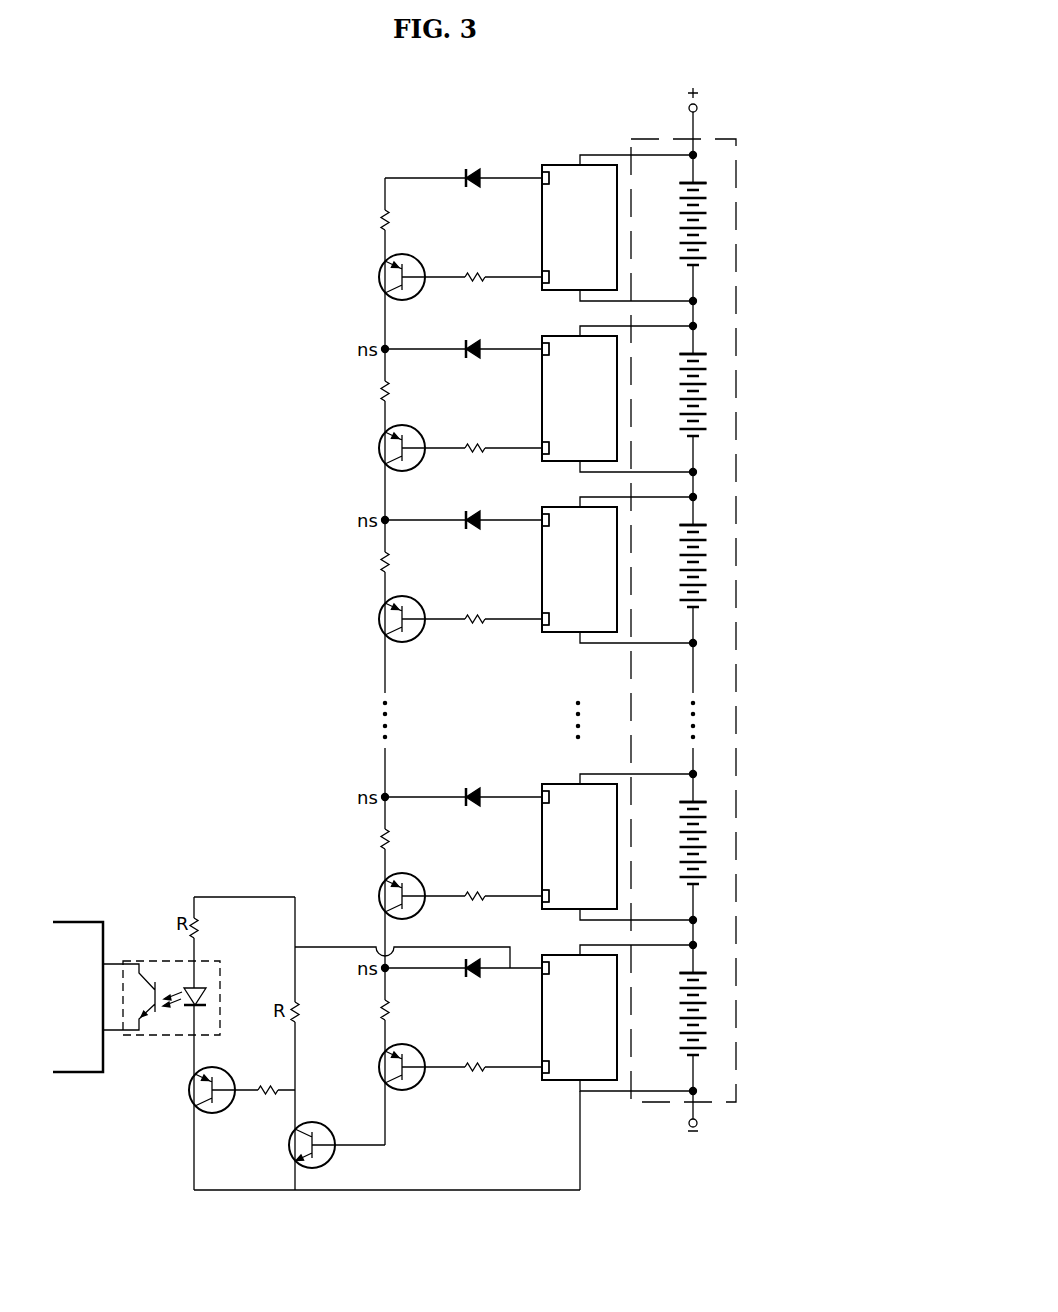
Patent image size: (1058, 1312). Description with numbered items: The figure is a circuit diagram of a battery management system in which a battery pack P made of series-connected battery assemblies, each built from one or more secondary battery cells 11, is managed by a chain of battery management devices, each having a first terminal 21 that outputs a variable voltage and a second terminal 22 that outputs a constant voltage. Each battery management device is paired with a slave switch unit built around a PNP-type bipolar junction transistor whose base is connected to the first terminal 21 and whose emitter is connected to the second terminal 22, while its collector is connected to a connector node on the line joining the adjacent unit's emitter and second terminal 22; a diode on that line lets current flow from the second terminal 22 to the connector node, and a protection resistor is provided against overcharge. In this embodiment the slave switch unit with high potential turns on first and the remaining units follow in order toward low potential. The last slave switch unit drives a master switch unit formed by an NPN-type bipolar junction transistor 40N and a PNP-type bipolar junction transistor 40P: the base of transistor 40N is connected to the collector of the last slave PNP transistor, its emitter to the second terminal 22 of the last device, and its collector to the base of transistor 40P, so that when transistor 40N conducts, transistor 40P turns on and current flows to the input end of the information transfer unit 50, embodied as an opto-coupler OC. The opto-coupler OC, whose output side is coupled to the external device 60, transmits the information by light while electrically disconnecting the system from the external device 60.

The secondary battery cell 11 is at (699, 183).
The first terminal 21 is at (550, 277).
The second terminal 22 is at (550, 178).
The PNP-type bipolar junction transistor 40P is at (227, 1107).
The NPN-type bipolar junction transistor 40N is at (322, 1126).
The information transfer unit 50 is at (161, 977).
The opto-coupler OC is at (164, 960).
The external device 60 is at (87, 922).
The battery pack P is at (634, 139).